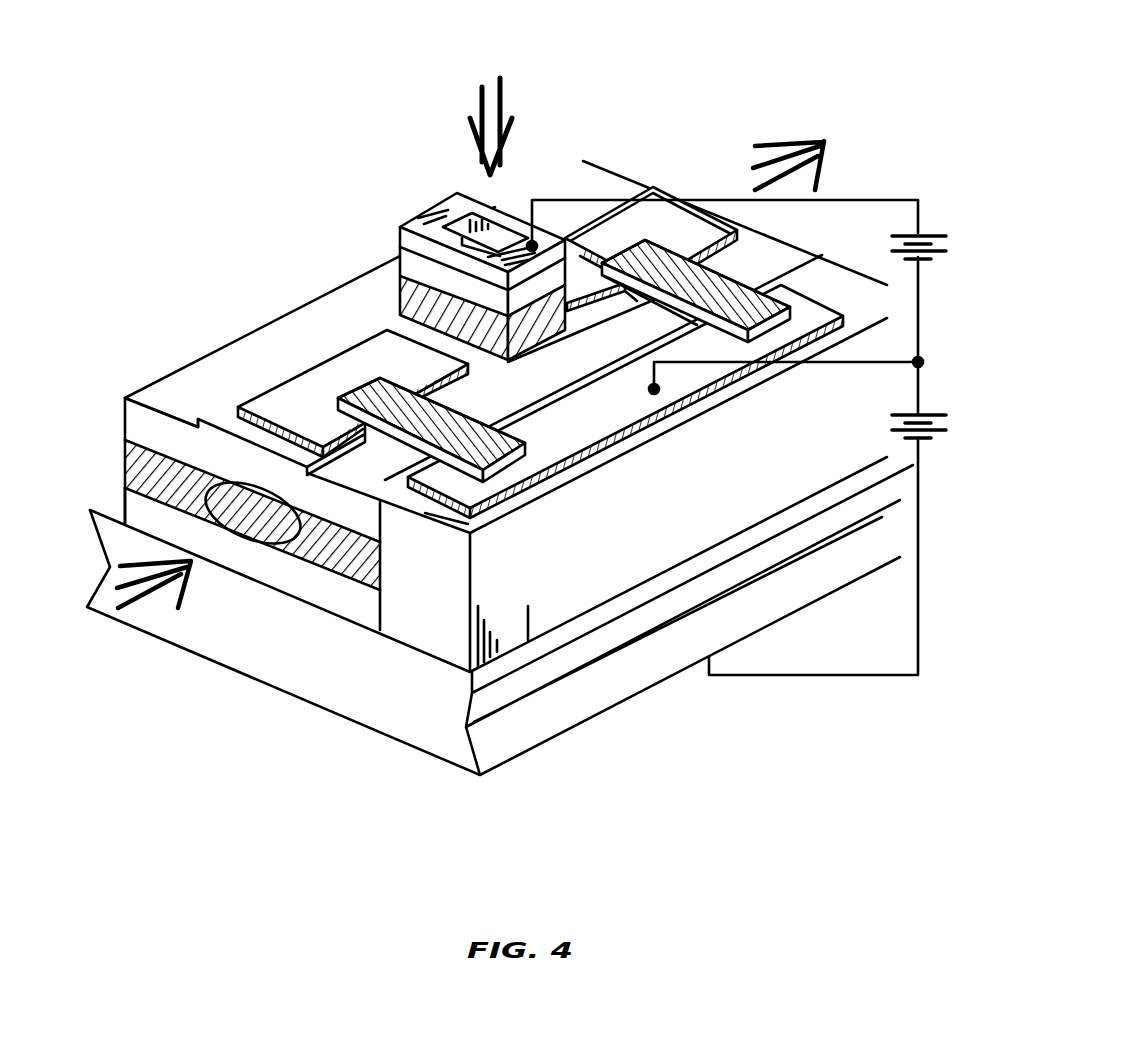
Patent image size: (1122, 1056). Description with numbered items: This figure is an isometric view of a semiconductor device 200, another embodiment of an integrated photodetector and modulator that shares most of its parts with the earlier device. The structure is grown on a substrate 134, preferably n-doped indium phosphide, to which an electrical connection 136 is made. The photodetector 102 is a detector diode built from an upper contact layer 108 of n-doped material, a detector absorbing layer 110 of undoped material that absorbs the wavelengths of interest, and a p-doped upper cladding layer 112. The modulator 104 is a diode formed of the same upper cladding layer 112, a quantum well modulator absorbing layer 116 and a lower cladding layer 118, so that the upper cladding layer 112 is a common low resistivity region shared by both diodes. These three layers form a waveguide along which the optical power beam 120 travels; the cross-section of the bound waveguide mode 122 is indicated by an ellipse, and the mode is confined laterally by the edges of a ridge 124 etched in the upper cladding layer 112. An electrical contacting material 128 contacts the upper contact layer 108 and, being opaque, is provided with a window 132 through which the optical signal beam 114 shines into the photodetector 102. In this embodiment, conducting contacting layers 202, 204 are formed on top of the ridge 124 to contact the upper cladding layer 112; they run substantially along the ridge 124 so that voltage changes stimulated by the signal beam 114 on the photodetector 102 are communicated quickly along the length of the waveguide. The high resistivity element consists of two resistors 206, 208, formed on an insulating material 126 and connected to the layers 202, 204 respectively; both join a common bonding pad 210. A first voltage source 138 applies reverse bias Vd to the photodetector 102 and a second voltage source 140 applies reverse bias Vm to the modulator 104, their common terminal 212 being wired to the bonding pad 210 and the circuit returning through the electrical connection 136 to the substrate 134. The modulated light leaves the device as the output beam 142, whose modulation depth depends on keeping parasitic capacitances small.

The semiconductor device 200 is at (286, 68).
The photodetector 102 is at (275, 232).
The modulator 104 is at (396, 500).
The upper contact layer 108 is at (399, 292).
The detector absorbing layer 110 is at (397, 302).
The upper cladding layer 112 is at (240, 354).
The optical signal beam 114 is at (474, 104).
The quantum well modulator absorbing layer 116 is at (107, 452).
The lower cladding layer 118 is at (334, 602).
The optical power beam 120 is at (142, 614).
The waveguide mode 122 is at (268, 552).
The ridge 124 is at (196, 425).
The insulating material 126 is at (558, 541).
The electrical contacting material 128 is at (408, 238).
The window 132 is at (497, 226).
The substrate 134 is at (330, 699).
The electrical connection 136 is at (814, 675).
The first voltage source 138 is at (905, 230).
The second voltage source 140 is at (887, 405).
The output beam 142 is at (769, 144).
The conducting contacting layer 202 is at (310, 402).
The conducting contacting layer 204 is at (668, 212).
The resistor 206 is at (392, 406).
The resistor 208 is at (745, 265).
The common bonding pad 210 is at (558, 437).
The common terminal 212 is at (660, 396).